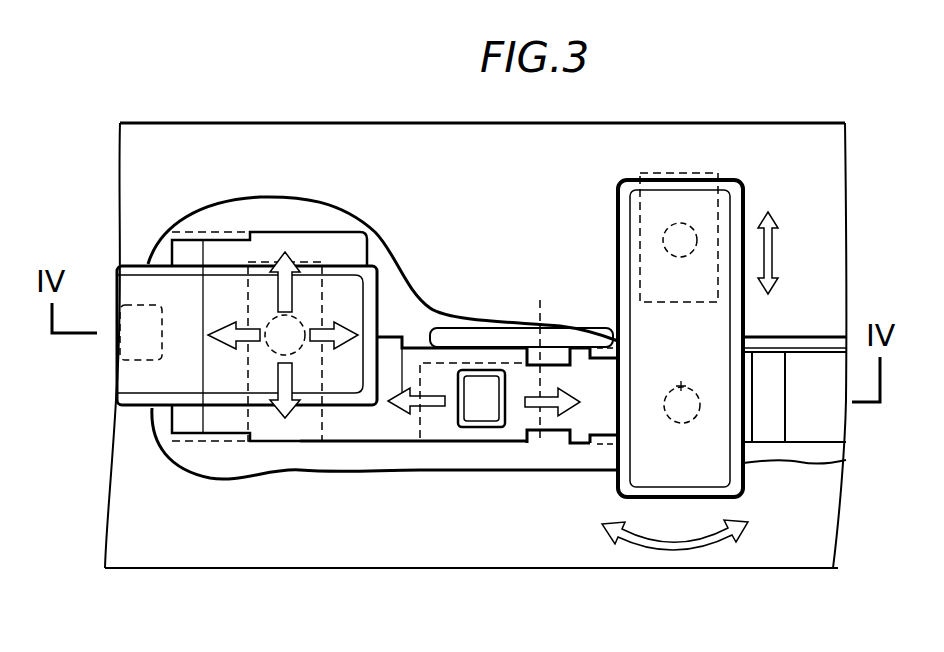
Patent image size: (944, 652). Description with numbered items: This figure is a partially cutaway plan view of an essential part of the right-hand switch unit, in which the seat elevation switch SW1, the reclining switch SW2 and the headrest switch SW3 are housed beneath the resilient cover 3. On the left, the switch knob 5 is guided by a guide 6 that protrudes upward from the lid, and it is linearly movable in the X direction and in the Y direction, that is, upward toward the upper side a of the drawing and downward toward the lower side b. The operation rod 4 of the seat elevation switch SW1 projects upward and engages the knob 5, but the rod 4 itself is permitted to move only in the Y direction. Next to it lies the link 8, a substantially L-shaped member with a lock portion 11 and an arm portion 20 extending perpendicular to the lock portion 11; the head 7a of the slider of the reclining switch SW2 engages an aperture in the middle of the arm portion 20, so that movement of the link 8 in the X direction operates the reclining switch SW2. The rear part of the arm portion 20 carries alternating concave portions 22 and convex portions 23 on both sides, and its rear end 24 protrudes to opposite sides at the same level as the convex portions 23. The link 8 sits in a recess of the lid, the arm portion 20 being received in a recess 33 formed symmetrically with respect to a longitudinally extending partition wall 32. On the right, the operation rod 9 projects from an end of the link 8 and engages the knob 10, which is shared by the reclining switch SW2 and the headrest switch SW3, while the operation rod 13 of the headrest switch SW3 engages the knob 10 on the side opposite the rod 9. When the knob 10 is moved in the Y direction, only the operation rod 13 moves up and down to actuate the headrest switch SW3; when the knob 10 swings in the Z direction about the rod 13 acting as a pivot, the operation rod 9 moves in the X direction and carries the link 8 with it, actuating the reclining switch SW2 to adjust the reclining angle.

The resilient cover 3 is at (132, 148).
The operation rod 4 is at (300, 348).
The switch knob 5 is at (132, 378).
The guide 6 is at (130, 345).
The head of the slider 7a is at (483, 430).
The link 8 is at (428, 452).
The operation rod 9 is at (678, 384).
The knob 10 is at (622, 268).
The lock portion 11 is at (348, 248).
The operation rod 13 is at (665, 232).
The arm portion 20 is at (450, 330).
The concave portions 22 is at (540, 336).
The convex portions 23 is at (583, 340).
The rear end 24 is at (770, 430).
The partition wall 32 is at (478, 340).
The recess 33 is at (838, 421).
The seat elevation switch SW1 is at (314, 250).
The reclining switch SW2 is at (503, 468).
The headrest switch SW3 is at (698, 160).
The upper side a is at (303, 123).
The lower side b is at (297, 570).